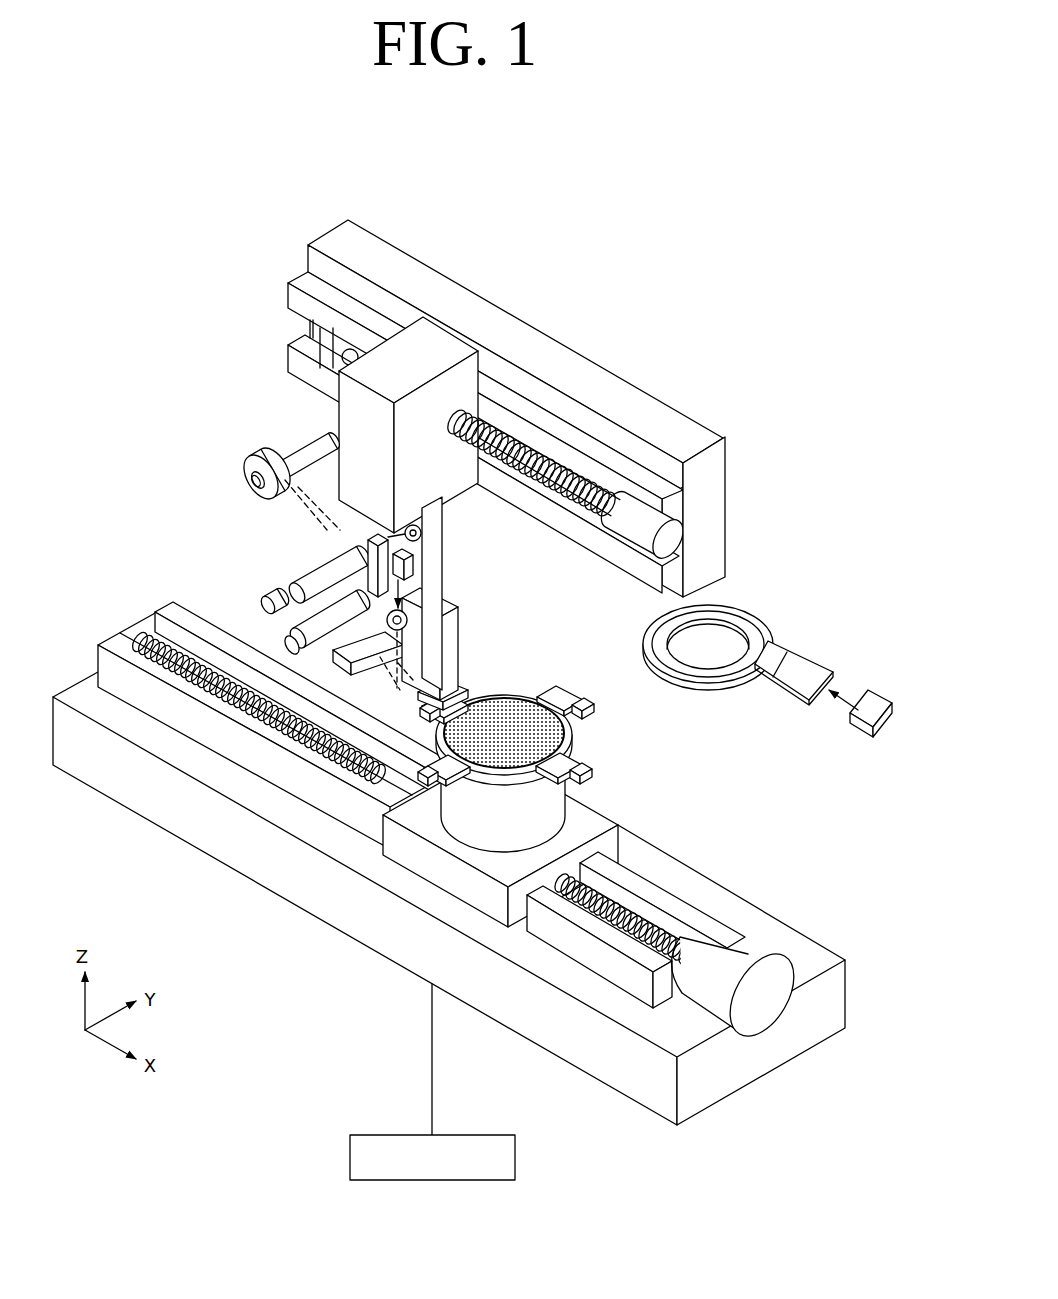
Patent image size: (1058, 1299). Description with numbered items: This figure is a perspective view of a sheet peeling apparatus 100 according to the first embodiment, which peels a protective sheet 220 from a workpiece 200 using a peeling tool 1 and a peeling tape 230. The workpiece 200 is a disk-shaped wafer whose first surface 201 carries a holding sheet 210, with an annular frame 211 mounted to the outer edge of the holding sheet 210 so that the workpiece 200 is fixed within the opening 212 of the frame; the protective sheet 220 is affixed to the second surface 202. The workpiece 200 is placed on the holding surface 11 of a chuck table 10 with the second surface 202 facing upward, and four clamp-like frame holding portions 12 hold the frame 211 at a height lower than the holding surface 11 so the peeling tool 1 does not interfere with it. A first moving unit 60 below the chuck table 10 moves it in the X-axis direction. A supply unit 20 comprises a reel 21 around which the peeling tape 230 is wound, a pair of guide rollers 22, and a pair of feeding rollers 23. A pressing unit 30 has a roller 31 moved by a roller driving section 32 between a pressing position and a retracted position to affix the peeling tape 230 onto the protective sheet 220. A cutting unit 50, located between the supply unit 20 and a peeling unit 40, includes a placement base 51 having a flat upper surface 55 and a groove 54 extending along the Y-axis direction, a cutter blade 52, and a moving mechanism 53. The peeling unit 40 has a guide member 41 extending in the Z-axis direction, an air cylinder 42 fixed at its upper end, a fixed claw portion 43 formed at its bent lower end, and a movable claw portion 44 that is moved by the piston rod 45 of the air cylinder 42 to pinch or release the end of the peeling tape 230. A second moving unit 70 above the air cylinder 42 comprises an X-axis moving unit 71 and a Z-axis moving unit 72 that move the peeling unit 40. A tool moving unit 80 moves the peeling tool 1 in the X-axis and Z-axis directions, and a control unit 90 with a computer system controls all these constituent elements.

The peeling tool 1 is at (739, 636).
The chuck table 10 is at (523, 775).
The holding surface 11 is at (528, 712).
The frame holding portions 12 is at (564, 699).
The supply unit 20 is at (254, 527).
The reel 21 is at (258, 460).
The guide rollers 22 is at (309, 575).
The feeding rollers 23 is at (266, 600).
The pressing unit 30 is at (506, 418).
The roller 31 is at (470, 536).
The roller driving section 32 is at (447, 512).
The peeling unit 40 is at (473, 569).
The guide member 41 is at (460, 610).
The air cylinder 42 is at (413, 612).
The fixed claw portion 43 is at (463, 690).
The movable claw portion 44 is at (434, 680).
The piston rod 45 is at (448, 631).
The cutting unit 50 is at (373, 528).
The placement base 51 is at (337, 680).
The cutter blade 52 is at (238, 708).
The moving mechanism 53 is at (458, 510).
The groove 54 is at (285, 705).
The upper surface 55 is at (323, 700).
The first moving unit 60 is at (752, 945).
The second moving unit 70 is at (453, 247).
The X-axis moving unit 71 is at (474, 416).
The Z-axis moving unit 72 is at (438, 404).
The tool moving unit 80 is at (857, 714).
The control unit 90 is at (477, 1135).
The sheet peeling apparatus 100 is at (192, 236).
The workpiece 200 is at (713, 636).
The first surface 201 is at (692, 684).
The second surface 202 is at (770, 641).
The holding sheet 210 is at (743, 620).
The annular frame 211 is at (765, 630).
The opening 212 is at (743, 673).
The protective sheet 220 is at (692, 628).
The peeling tape 230 is at (403, 689).